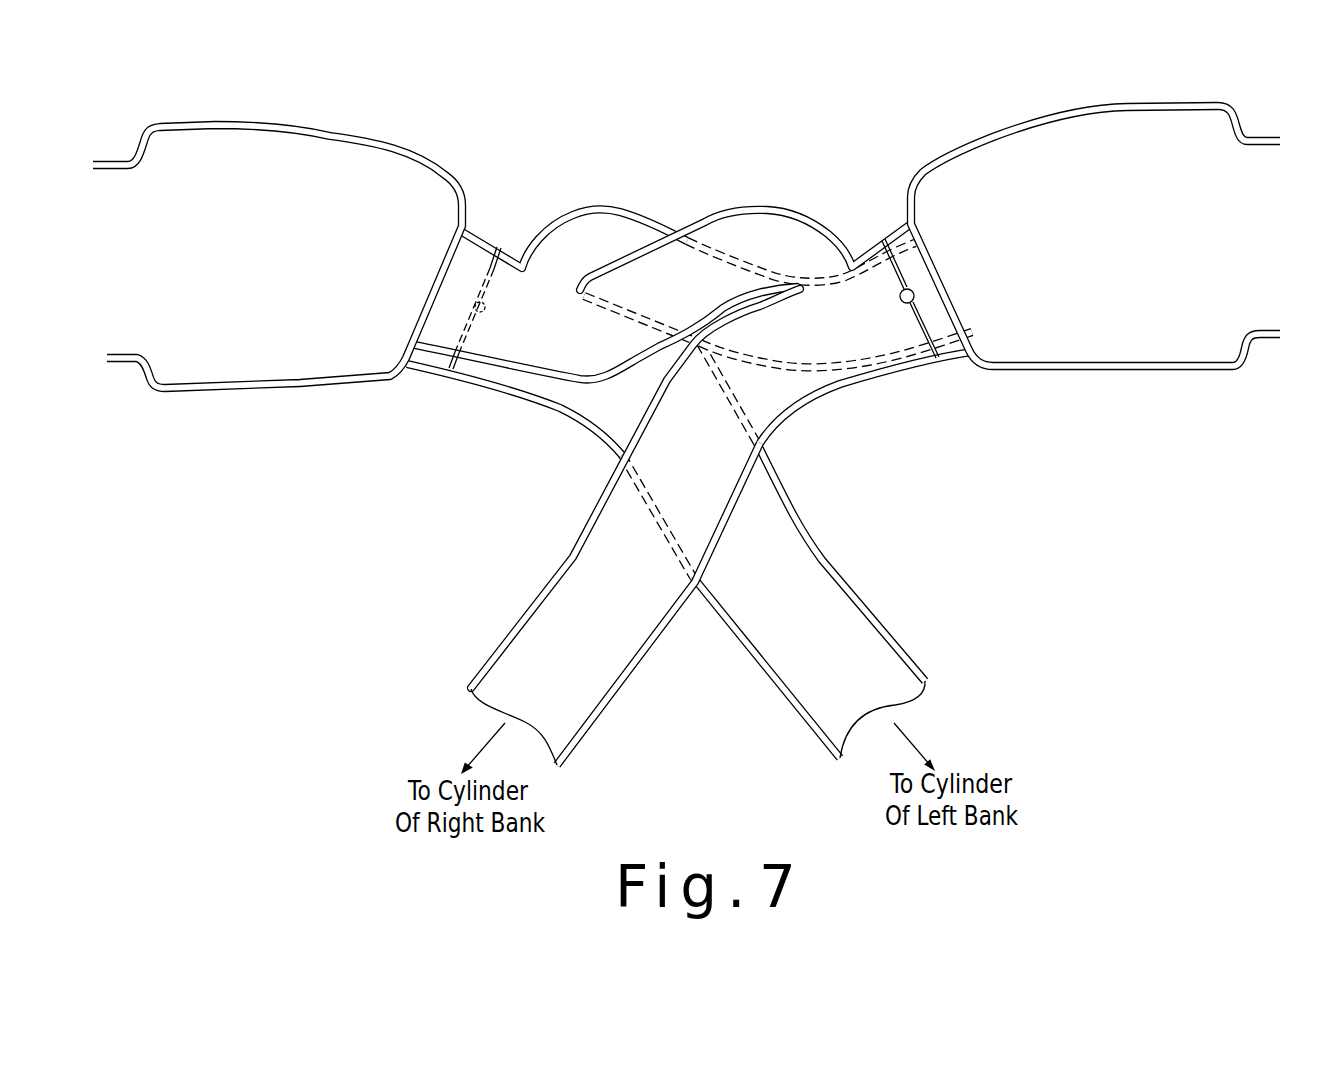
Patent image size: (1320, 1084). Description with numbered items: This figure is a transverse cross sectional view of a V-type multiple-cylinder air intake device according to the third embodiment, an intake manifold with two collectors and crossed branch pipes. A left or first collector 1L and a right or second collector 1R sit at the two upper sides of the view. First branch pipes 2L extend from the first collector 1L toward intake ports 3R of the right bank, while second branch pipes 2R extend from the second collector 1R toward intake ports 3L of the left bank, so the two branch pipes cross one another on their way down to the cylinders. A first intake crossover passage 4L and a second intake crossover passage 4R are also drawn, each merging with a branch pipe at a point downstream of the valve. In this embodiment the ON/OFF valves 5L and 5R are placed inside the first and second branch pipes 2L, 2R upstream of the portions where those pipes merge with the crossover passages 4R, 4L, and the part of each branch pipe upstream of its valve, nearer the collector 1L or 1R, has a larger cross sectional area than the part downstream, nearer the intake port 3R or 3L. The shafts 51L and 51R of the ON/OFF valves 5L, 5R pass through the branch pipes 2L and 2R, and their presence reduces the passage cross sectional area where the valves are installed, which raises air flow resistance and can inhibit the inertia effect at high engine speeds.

The second collector 1R is at (392, 168).
The first collector 1L is at (1003, 137).
The second branch pipe 2R is at (623, 403).
The first branch pipe 2L is at (957, 360).
The intake port of the right bank 3R is at (588, 702).
The intake port of the left bank 3L is at (804, 699).
The second intake crossover passage 4R is at (730, 240).
The first intake crossover passage 4L is at (587, 230).
The ON/OFF valve 5R is at (451, 368).
The ON/OFF valve 5L is at (890, 233).
The shaft 51R is at (467, 297).
The shaft 51L is at (903, 303).